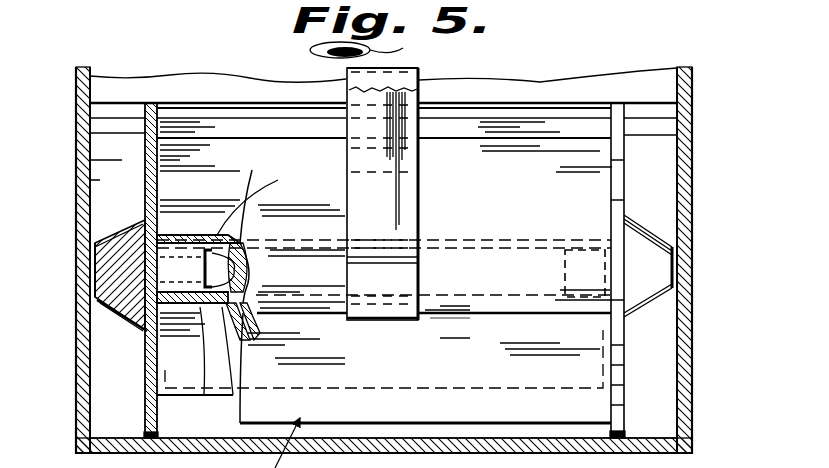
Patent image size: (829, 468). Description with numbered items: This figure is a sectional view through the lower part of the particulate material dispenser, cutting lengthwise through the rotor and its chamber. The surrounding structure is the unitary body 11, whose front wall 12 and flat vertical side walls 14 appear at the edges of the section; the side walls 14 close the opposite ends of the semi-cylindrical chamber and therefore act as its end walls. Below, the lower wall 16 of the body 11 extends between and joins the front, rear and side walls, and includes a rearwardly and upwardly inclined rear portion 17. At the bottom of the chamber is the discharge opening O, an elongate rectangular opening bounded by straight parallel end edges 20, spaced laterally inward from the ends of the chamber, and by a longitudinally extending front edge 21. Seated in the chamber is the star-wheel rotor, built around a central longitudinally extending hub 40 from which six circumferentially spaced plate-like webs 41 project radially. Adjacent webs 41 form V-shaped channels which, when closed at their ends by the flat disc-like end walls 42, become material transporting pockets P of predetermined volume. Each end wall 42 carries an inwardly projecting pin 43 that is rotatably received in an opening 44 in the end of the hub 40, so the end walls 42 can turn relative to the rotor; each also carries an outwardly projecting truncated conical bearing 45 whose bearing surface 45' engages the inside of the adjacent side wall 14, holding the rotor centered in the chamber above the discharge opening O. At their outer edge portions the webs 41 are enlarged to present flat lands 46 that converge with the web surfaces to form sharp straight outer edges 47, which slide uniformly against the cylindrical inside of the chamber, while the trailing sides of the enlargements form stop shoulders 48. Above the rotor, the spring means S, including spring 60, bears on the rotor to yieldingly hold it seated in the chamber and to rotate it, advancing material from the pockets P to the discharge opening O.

The body 11 is at (76, 356).
The front wall 12 is at (142, 456).
The side walls 14 is at (76, 97).
The lower wall 16 is at (585, 84).
The rear portion 17 is at (182, 382).
The end edges 20 is at (145, 370).
The front edge 21 is at (180, 406).
The hub 40 is at (268, 189).
The webs 41 is at (384, 250).
The end walls 42 is at (145, 142).
The pins 43 is at (168, 368).
The openings 44 is at (130, 236).
The bearings 45 is at (381, 266).
The bearing surfaces 45' is at (373, 260).
The lands 46 is at (178, 122).
The outer edges 47 is at (452, 312).
The trailing stop surfaces 48 is at (511, 300).
The spring 60 is at (404, 200).
The spring means S is at (423, 88).
The material transporting pockets P is at (287, 285).
The discharge opening O is at (450, 385).